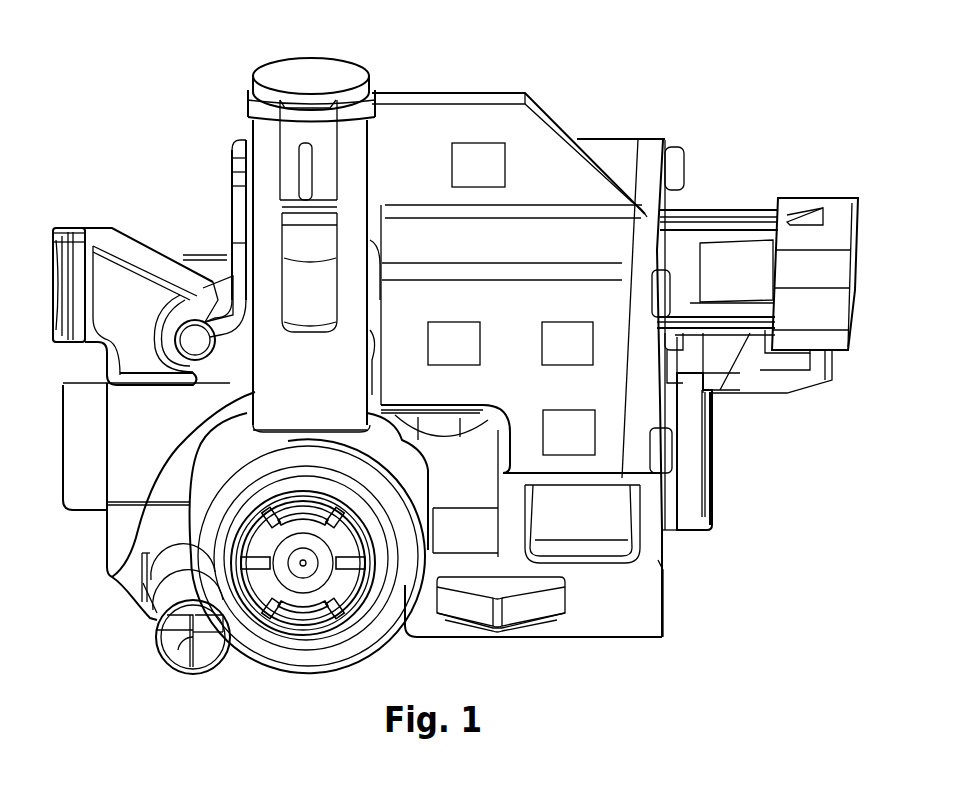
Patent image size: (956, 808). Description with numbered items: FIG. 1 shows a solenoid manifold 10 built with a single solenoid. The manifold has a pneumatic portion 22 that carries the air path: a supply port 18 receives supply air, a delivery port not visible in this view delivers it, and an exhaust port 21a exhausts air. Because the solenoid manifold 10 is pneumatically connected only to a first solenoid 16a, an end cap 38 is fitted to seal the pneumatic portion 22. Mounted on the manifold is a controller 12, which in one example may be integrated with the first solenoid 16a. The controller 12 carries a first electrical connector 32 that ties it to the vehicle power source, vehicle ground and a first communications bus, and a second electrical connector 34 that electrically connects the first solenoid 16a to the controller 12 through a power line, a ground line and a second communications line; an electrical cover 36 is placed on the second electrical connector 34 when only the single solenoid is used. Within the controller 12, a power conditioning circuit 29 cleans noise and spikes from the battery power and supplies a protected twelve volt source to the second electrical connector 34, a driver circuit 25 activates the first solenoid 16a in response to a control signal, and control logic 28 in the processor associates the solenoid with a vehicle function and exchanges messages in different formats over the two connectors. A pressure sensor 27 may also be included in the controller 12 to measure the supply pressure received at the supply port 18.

The solenoid manifold 10 is at (390, 73).
The controller 12 is at (598, 397).
The first solenoid 16a is at (283, 420).
The supply port 18 is at (708, 473).
The exhaust port 21a is at (299, 600).
The pneumatic portion 22 is at (583, 640).
The driver circuit 25 is at (490, 177).
The pressure sensor 27 is at (583, 447).
The control logic 28 is at (470, 355).
The power conditioning circuit 29 is at (583, 355).
The first electrical connector 32 is at (814, 212).
The second electrical connector 34 is at (253, 131).
The electrical cover 36 is at (265, 80).
The end cap 38 is at (60, 460).